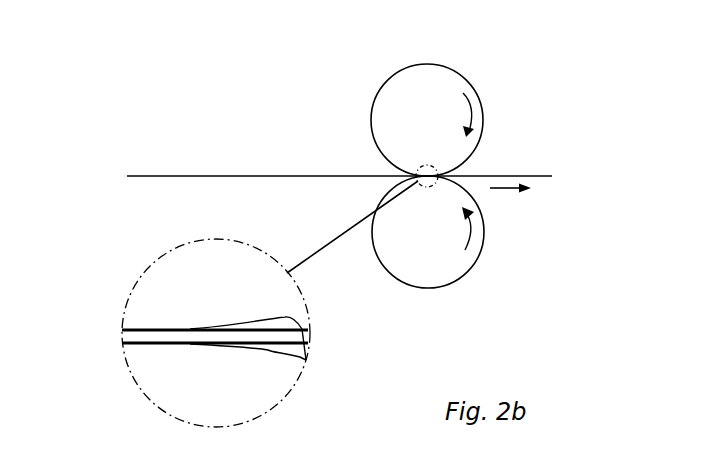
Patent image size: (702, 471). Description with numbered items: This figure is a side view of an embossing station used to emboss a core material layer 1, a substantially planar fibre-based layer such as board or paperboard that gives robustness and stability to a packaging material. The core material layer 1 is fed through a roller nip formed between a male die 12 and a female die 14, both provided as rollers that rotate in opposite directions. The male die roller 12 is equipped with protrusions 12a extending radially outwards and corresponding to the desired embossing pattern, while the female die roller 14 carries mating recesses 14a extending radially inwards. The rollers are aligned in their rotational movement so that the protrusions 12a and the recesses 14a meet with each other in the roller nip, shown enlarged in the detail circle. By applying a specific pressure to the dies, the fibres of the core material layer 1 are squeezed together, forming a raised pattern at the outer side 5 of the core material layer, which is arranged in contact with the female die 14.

The core material layer 1 is at (322, 176).
The male die 12 is at (483, 117).
The female die 14 is at (465, 273).
The protrusions 12a is at (292, 320).
The recesses 14a is at (300, 365).
The outer side 5 is at (307, 361).